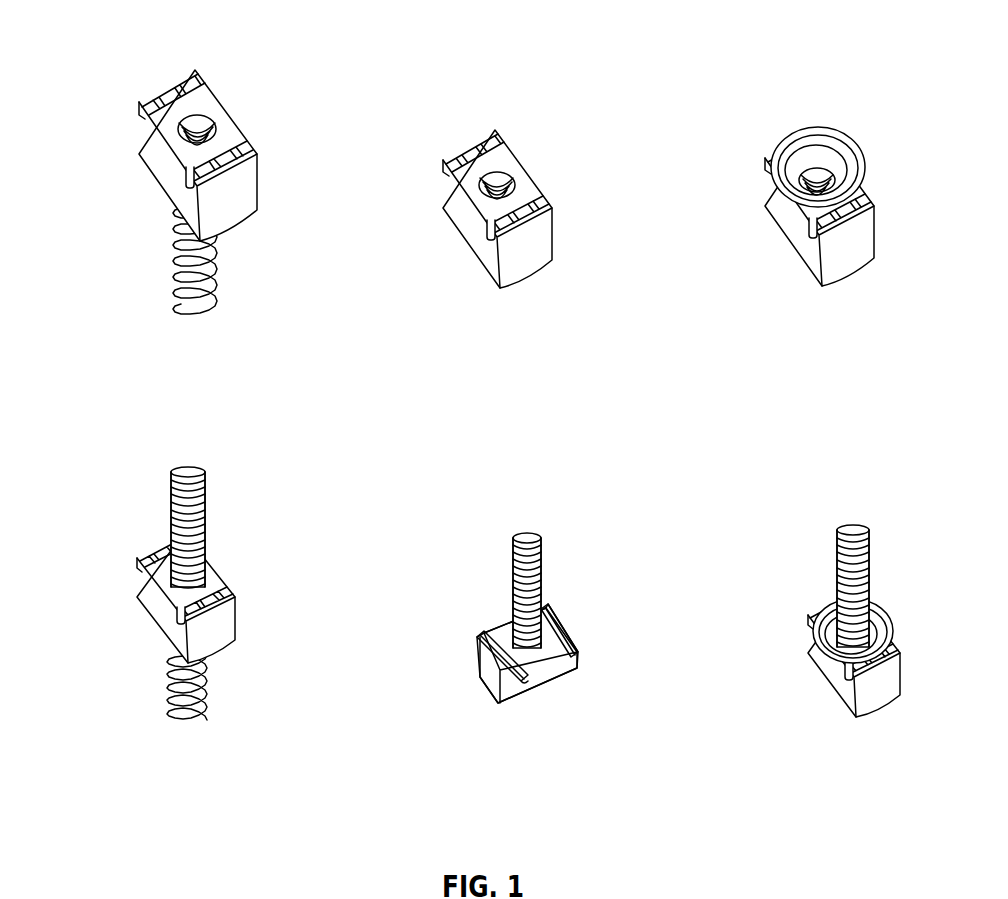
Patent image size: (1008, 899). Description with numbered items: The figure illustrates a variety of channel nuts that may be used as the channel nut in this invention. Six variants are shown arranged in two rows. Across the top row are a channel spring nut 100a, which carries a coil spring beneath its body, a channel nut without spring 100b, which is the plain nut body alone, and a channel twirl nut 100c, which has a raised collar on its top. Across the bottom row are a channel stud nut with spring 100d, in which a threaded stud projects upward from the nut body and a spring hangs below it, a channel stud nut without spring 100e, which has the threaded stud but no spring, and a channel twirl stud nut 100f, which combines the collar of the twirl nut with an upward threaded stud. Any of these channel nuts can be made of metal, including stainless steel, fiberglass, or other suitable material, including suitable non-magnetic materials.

The channel spring nut 100a is at (142, 42).
The channel nut without spring 100b is at (443, 121).
The channel twirl nut 100c is at (753, 121).
The channel stud nut with spring 100d is at (150, 465).
The channel stud nut without spring 100e is at (486, 522).
The channel twirl stud nut 100f is at (805, 522).